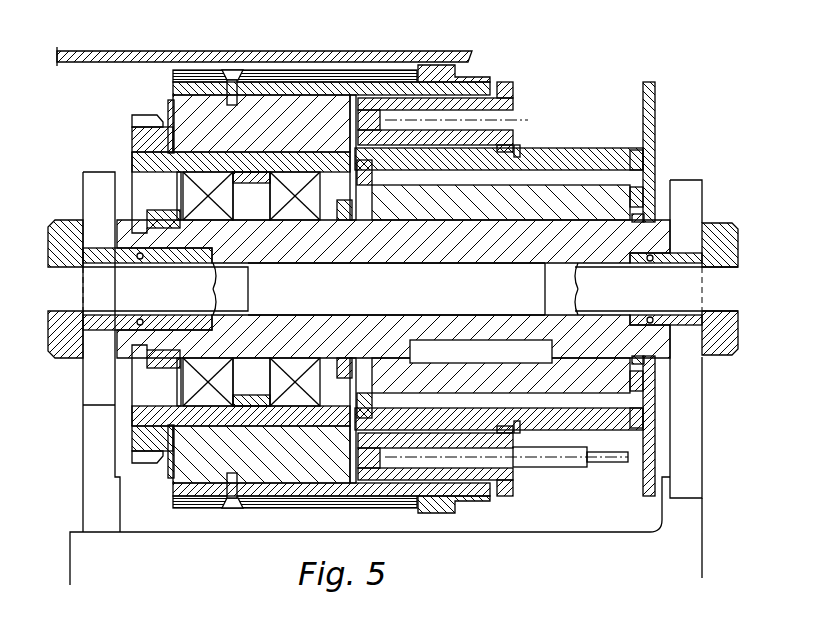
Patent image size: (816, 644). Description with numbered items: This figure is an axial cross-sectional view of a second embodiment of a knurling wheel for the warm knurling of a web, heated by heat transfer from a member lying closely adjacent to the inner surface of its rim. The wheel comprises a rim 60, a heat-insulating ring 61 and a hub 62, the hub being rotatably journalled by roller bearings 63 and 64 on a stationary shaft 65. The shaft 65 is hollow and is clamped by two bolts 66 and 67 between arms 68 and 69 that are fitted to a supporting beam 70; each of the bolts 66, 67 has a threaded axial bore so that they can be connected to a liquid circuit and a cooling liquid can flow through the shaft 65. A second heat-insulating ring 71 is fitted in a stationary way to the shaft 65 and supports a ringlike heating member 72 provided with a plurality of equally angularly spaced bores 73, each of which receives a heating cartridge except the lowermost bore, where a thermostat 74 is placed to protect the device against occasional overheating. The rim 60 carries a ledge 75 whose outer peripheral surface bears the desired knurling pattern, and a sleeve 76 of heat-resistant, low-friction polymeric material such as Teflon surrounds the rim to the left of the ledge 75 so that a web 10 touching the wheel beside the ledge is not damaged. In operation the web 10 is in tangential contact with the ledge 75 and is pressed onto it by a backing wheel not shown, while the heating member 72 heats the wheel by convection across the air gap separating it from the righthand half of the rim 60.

The web 10 is at (95, 52).
The sleeve 76 is at (200, 77).
The rim 60 is at (278, 80).
The heat-insulating ring 61 is at (200, 116).
The hub 62 is at (150, 163).
The ledge 75 is at (446, 71).
The bores 73 is at (510, 118).
The heating member 72 is at (516, 132).
The second heat-insulating ring 71 is at (590, 152).
The roller bearing 63 is at (281, 212).
The roller bearing 64 is at (226, 208).
The stationary shaft 65 is at (402, 252).
The bolt 66 is at (102, 328).
The bolt 67 is at (692, 328).
The arm 68 is at (98, 442).
The arm 69 is at (692, 450).
The supporting beam 70 is at (97, 572).
The thermostat 74 is at (550, 462).